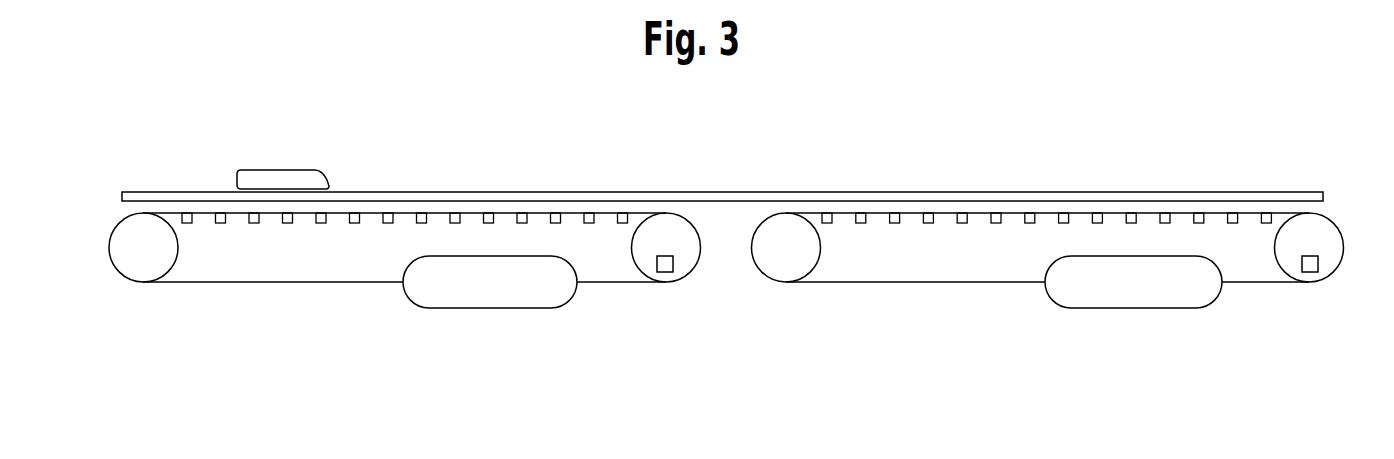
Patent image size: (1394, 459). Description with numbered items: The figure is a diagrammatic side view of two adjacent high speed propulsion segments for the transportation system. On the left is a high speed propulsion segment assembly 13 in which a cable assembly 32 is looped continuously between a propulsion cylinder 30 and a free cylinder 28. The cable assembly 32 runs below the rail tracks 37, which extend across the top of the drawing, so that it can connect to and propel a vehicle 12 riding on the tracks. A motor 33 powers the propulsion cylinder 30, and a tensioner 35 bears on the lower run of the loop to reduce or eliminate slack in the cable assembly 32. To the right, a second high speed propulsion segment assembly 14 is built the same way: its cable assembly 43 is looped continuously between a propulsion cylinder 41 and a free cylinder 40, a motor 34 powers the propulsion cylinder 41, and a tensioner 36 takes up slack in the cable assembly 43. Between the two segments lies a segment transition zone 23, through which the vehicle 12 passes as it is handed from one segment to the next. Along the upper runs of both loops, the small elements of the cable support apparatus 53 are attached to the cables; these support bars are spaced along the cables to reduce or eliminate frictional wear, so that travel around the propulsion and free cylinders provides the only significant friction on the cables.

The vehicle 12 is at (273, 170).
The high speed propulsion segment assembly 13 is at (409, 231).
The high speed propulsion segment assembly 14 is at (1066, 282).
The segment transition zone 23 is at (722, 292).
The free cylinder 28 is at (137, 268).
The propulsion cylinder 30 is at (668, 226).
The cable assembly 32 is at (603, 215).
The motor 33 is at (665, 272).
The motor 34 is at (1310, 273).
The tensioner 35 is at (432, 288).
The tensioner 36 is at (1089, 295).
The rail tracks 37 is at (485, 192).
The free cylinder 40 is at (803, 263).
The propulsion cylinder 41 is at (1328, 239).
The cable assembly 43 is at (950, 215).
The cable support apparatus 53 is at (387, 213).